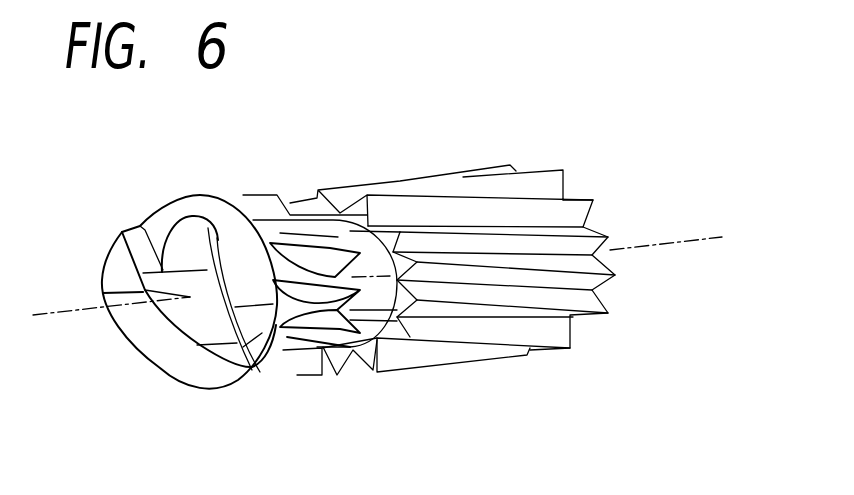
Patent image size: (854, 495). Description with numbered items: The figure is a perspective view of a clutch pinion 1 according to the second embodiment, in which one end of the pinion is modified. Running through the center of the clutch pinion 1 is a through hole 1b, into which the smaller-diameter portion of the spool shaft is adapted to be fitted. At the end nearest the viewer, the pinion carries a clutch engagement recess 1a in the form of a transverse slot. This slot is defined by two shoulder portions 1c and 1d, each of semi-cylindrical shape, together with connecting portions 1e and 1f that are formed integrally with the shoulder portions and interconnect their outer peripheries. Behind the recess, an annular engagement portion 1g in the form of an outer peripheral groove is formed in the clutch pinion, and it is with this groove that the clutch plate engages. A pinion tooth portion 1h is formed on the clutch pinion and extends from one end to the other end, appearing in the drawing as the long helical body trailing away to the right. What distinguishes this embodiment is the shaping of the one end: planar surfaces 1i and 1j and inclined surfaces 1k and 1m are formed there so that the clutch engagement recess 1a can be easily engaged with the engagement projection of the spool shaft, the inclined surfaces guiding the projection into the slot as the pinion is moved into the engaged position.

The clutch pinion 1 is at (498, 157).
The clutch engagement recess 1a is at (190, 237).
The through hole 1b is at (220, 295).
The shoulder portion 1c is at (103, 293).
The shoulder portion 1d is at (273, 360).
The connecting portion 1e is at (195, 207).
The connecting portion 1f is at (248, 377).
The annular engagement portion 1g is at (365, 323).
The pinion tooth portion 1h is at (543, 170).
The planar surface 1i is at (117, 260).
The planar surface 1j is at (262, 368).
The inclined surface 1k is at (157, 343).
The inclined surface 1m is at (238, 227).